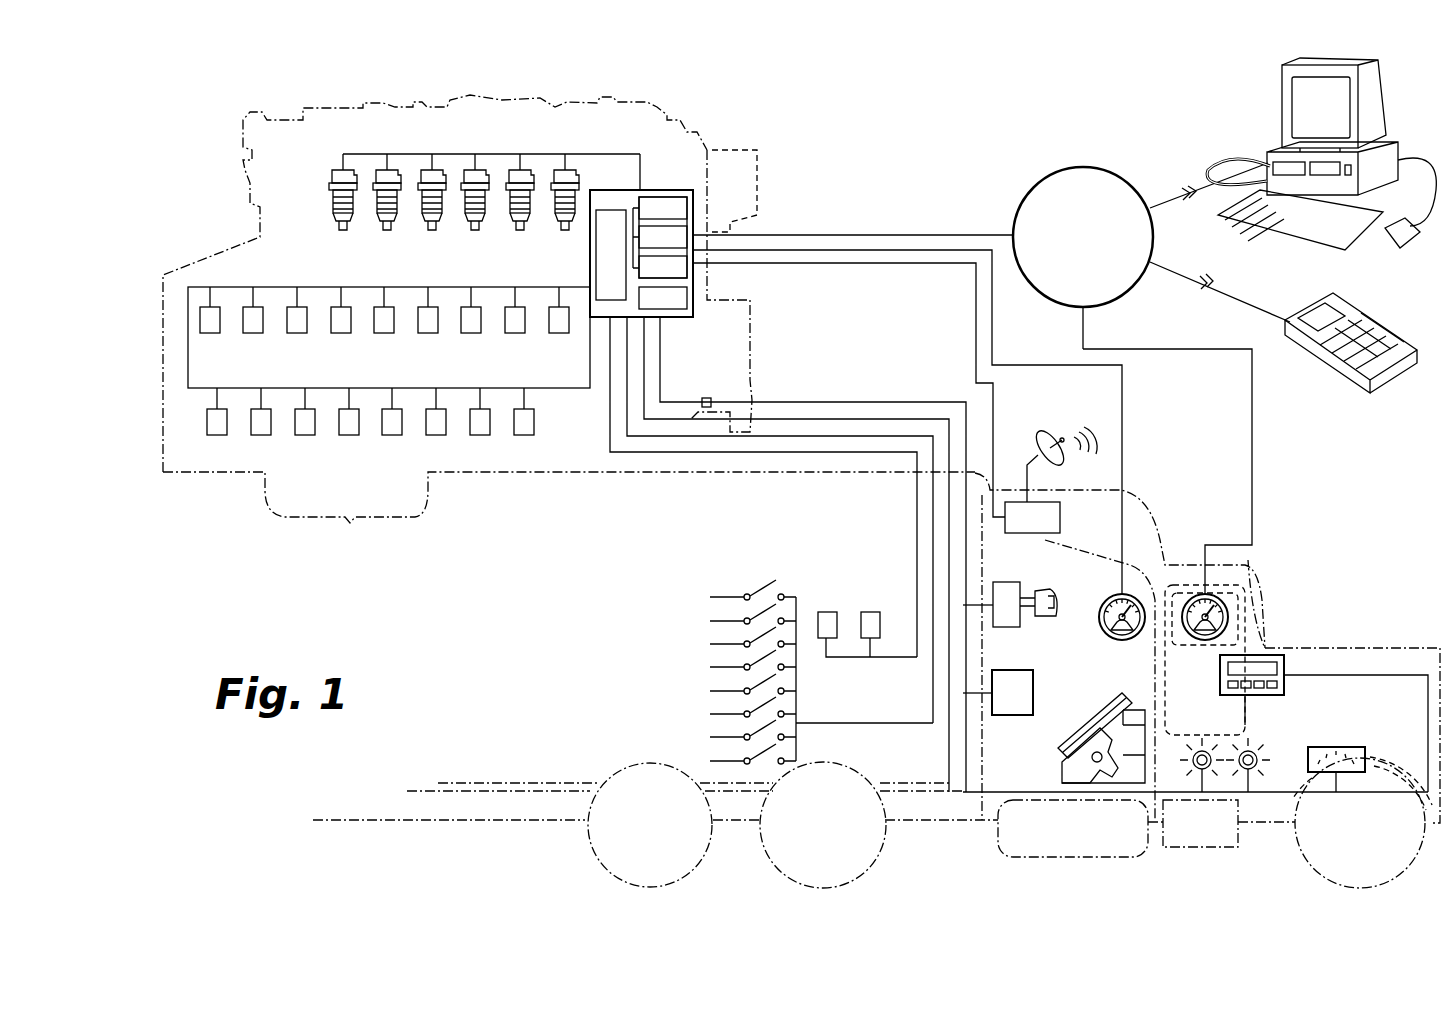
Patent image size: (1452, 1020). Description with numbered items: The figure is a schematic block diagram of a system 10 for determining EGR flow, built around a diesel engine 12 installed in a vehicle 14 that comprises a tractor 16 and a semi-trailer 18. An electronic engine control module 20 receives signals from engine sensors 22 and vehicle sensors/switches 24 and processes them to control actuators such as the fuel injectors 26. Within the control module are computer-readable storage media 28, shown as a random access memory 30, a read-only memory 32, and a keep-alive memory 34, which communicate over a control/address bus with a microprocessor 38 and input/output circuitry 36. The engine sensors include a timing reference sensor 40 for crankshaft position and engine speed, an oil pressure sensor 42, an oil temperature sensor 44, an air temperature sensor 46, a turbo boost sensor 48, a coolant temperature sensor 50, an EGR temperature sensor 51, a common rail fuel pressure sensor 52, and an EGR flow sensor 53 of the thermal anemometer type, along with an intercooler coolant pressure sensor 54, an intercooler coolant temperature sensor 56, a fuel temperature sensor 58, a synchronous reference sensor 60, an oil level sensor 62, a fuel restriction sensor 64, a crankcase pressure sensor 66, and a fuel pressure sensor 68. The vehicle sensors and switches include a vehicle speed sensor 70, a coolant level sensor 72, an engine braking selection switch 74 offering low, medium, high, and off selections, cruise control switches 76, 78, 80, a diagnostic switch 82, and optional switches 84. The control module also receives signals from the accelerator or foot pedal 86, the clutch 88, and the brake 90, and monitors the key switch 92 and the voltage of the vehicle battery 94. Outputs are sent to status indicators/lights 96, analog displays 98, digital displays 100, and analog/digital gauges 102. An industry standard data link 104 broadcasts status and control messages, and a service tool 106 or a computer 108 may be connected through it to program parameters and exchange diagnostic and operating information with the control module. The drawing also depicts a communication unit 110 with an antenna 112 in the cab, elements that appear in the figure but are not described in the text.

The system 10 is at (838, 105).
The diesel engine 12 is at (502, 100).
The vehicle 14 is at (1150, 500).
The tractor 16 is at (1323, 643).
The semi-trailer 18 is at (905, 824).
The electronic engine control module 20 is at (657, 190).
The engine sensors 22 is at (188, 367).
The vehicle sensors/switches 24 is at (545, 642).
The fuel injectors 26 is at (393, 135).
The computer-readable storage media 28 is at (690, 213).
The random access memory 30 is at (672, 197).
The read-only memory 32 is at (693, 237).
The keep-alive memory 34 is at (693, 262).
The input/output circuitry 36 is at (687, 302).
The microprocessor 38 is at (596, 252).
The timing reference sensor 40 is at (569, 320).
The oil pressure sensor 42 is at (525, 320).
The oil temperature sensor 44 is at (481, 320).
The air temperature sensor 46 is at (438, 320).
The turbo boost sensor 48 is at (394, 320).
The coolant temperature sensor 50 is at (351, 320).
The EGR temperature sensor 51 is at (263, 320).
The common rail fuel pressure sensor 52 is at (307, 320).
The EGR flow sensor 53 is at (220, 320).
The intercooler coolant pressure sensor 54 is at (227, 422).
The intercooler coolant temperature sensor 56 is at (271, 422).
The fuel temperature sensor 58 is at (315, 422).
The synchronous reference sensor 60 is at (359, 422).
The oil level sensor 62 is at (402, 422).
The fuel restriction sensor 64 is at (446, 422).
The crankcase pressure sensor 66 is at (490, 422).
The fuel pressure sensor 68 is at (534, 422).
The vehicle speed sensor 70 is at (880, 632).
The coolant level sensor 72 is at (837, 632).
The engine braking selection switch 74 is at (562, 713).
The cruise control switch 76 is at (612, 691).
The cruise control switch 78 is at (638, 668).
The cruise control switch 80 is at (650, 645).
The diagnostic switch 82 is at (660, 621).
The optional switches 84 is at (665, 598).
The accelerator or foot pedal 86 is at (1062, 778).
The clutch 88 is at (1130, 702).
The brake 90 is at (1105, 700).
The key switch 92 is at (1005, 627).
The vehicle battery 94 is at (1005, 715).
The status indicators/lights 96 is at (1272, 740).
The analog displays 98 is at (1343, 745).
The digital displays 100 is at (1220, 672).
The analog/digital gauges 102 is at (1106, 583).
The data link 104 is at (1095, 158).
The service tool 106 is at (1355, 302).
The computer 108 is at (1387, 118).
The transceiver 110 is at (1060, 515).
The antenna 112 is at (1028, 430).